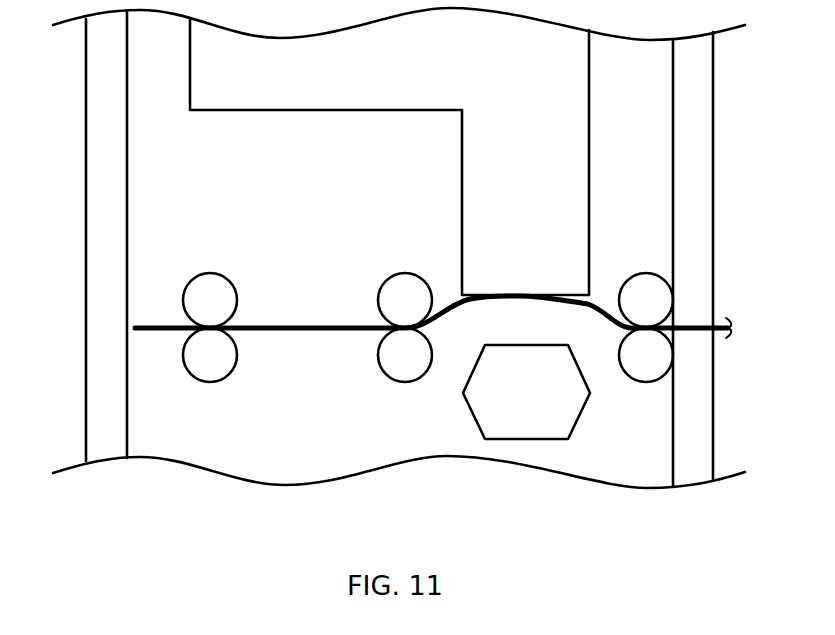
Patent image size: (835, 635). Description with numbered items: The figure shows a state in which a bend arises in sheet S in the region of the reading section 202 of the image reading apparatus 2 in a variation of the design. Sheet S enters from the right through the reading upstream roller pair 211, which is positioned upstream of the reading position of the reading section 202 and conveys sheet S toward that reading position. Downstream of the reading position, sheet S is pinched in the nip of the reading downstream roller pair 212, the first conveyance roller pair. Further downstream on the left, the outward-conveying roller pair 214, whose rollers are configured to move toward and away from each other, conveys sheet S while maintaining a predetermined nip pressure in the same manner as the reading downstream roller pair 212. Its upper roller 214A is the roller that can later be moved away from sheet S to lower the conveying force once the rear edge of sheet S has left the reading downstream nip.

The image reading apparatus 2 is at (695, 138).
The reading section 202 is at (567, 208).
The reading upstream roller pair 211 is at (678, 300).
The reading downstream roller pair 212 is at (405, 272).
The outward-conveying roller pair 214 is at (212, 386).
The upper roller 214A is at (195, 300).
The sheet S is at (315, 325).